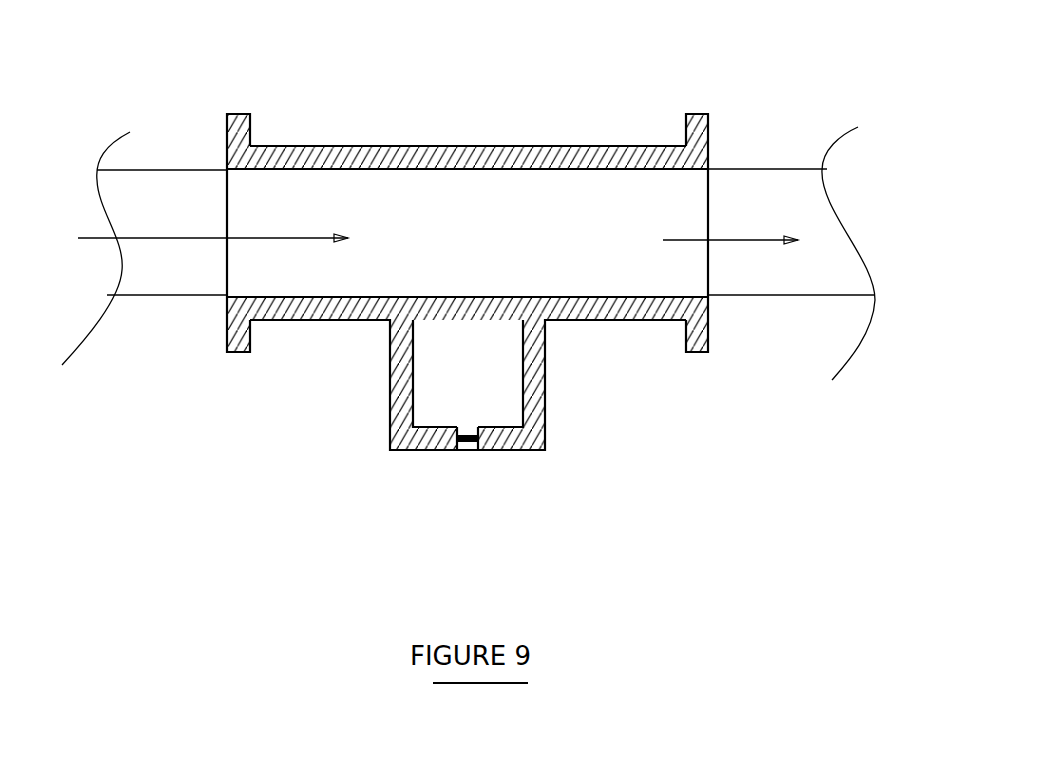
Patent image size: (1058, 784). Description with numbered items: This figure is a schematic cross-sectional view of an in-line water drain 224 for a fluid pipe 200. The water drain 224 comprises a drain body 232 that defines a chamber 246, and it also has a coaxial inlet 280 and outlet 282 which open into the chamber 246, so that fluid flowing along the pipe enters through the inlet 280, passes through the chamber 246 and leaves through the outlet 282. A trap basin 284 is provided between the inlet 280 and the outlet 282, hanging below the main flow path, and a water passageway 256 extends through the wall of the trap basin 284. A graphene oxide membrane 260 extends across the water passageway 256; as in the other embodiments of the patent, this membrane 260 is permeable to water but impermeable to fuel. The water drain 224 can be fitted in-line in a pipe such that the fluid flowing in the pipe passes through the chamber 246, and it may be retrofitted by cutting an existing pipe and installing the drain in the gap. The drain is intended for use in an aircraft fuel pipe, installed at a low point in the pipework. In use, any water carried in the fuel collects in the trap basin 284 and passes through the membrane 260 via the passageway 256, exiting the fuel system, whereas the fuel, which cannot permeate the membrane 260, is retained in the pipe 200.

The fluid pipe 200 is at (760, 167).
The in-line water drain 224 is at (443, 97).
The drain body 232 is at (542, 145).
The chamber 246 is at (590, 188).
The water passageway 256 is at (470, 450).
The graphene oxide membrane 260 is at (485, 430).
The inlet 280 is at (223, 270).
The outlet 282 is at (707, 273).
The trap basin 284 is at (503, 400).